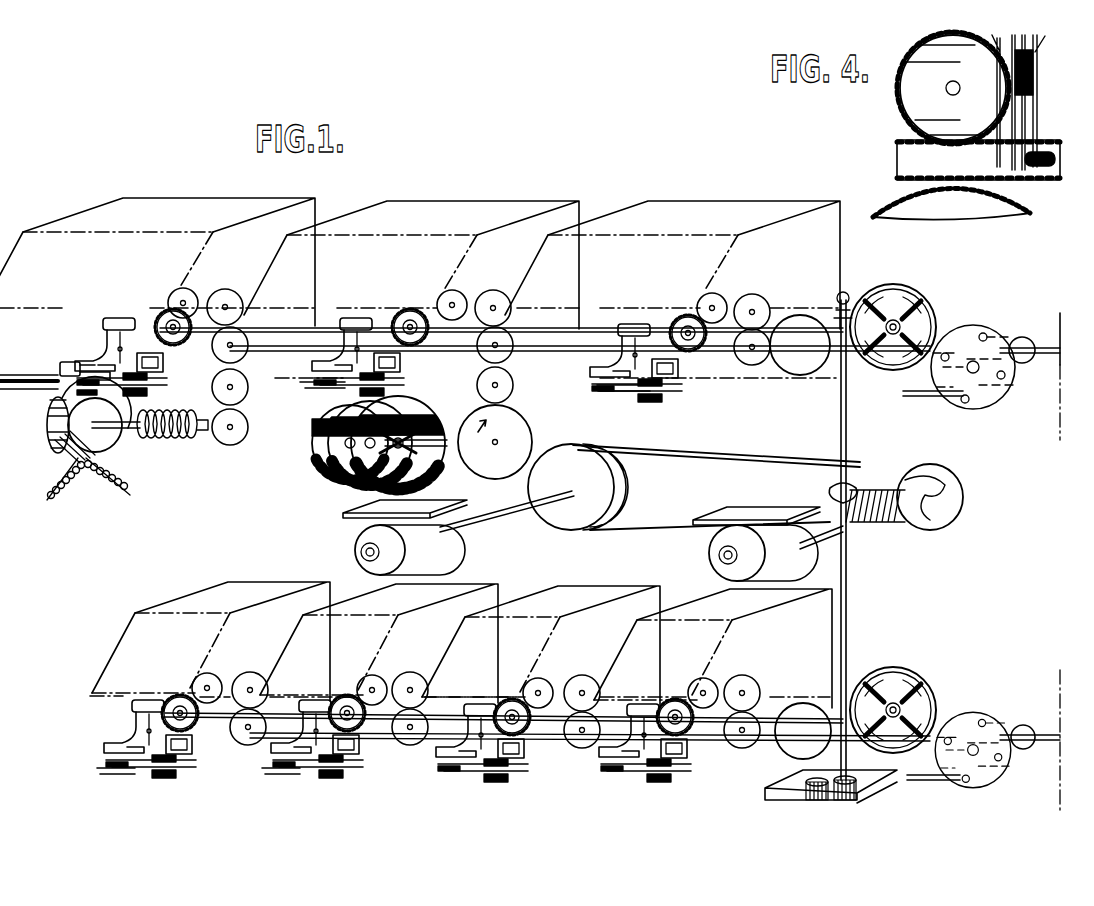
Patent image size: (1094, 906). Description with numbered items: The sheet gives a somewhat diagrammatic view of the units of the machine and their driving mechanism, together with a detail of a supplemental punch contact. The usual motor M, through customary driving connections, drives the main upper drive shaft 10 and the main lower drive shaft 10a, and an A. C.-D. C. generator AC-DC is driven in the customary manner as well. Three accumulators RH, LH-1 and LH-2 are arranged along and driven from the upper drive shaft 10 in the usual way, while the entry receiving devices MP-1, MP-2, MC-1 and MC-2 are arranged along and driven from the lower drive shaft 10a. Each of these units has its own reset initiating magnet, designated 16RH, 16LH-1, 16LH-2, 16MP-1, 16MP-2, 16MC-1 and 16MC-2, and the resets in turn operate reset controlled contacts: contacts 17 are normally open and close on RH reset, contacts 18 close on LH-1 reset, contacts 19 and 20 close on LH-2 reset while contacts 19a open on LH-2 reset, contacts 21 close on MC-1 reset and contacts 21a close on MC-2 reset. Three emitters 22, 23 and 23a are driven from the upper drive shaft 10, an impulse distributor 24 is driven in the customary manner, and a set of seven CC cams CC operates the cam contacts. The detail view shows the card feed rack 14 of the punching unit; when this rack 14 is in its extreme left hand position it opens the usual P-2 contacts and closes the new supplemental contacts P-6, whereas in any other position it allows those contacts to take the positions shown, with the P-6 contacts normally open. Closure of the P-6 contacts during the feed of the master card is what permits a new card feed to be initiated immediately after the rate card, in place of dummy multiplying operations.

In FIG. 1, the main upper drive shaft 10 is at (1047, 348).
In FIG. 1, the main lower drive shaft 10a is at (1047, 733).
In FIG. 4, the card feed rack 14 is at (982, 166).
In FIG. 1, the reset initiating magnet 16LH-2 is at (135, 360).
In FIG. 1, the reset initiating magnet 16LH-1 is at (432, 362).
In FIG. 1, the reset initiating magnet 16RH is at (690, 366).
In FIG. 1, the reset initiating magnet 16MC-2 is at (175, 748).
In FIG. 1, the reset initiating magnet 16MC-1 is at (360, 748).
In FIG. 1, the reset initiating magnet 16MP-2 is at (510, 755).
In FIG. 1, the reset initiating magnet 16MP-1 is at (670, 752).
In FIG. 1, the reset controlled contacts 17 is at (610, 387).
In FIG. 1, the reset controlled contacts 18 is at (337, 380).
In FIG. 1, the reset controlled contacts 19 is at (104, 426).
In FIG. 1, the reset controlled contacts 19a is at (103, 375).
In FIG. 1, the reset controlled contacts 20 is at (40, 380).
In FIG. 1, the reset controlled contacts 21 is at (273, 762).
In FIG. 1, the reset controlled contacts 21a is at (103, 762).
In FIG. 1, the emitter 22 is at (372, 486).
In FIG. 1, the emitter 23 is at (425, 476).
In FIG. 1, the emitter 23a is at (333, 447).
In FIG. 1, the impulse distributor 24 is at (50, 428).
In FIG. 1, the CC cams CC is at (173, 438).
In FIG. 1, the motor M is at (427, 553).
In FIG. 1, the A. C.-D. C. generator AC-DC is at (713, 545).
In FIG. 1, the accumulator LH-2 is at (157, 262).
In FIG. 1, the accumulator LH-1 is at (411, 265).
In FIG. 1, the accumulator RH is at (672, 265).
In FIG. 1, the entry receiving device MC-2 is at (211, 641).
In FIG. 1, the entry receiving device MC-1 is at (379, 643).
In FIG. 1, the entry receiving device MP-2 is at (541, 645).
In FIG. 1, the entry receiving device MP-1 is at (713, 648).
In FIG. 4, the P-2 contacts P-2 is at (1020, 146).
In FIG. 4, the supplemental contacts P-6 is at (1000, 130).